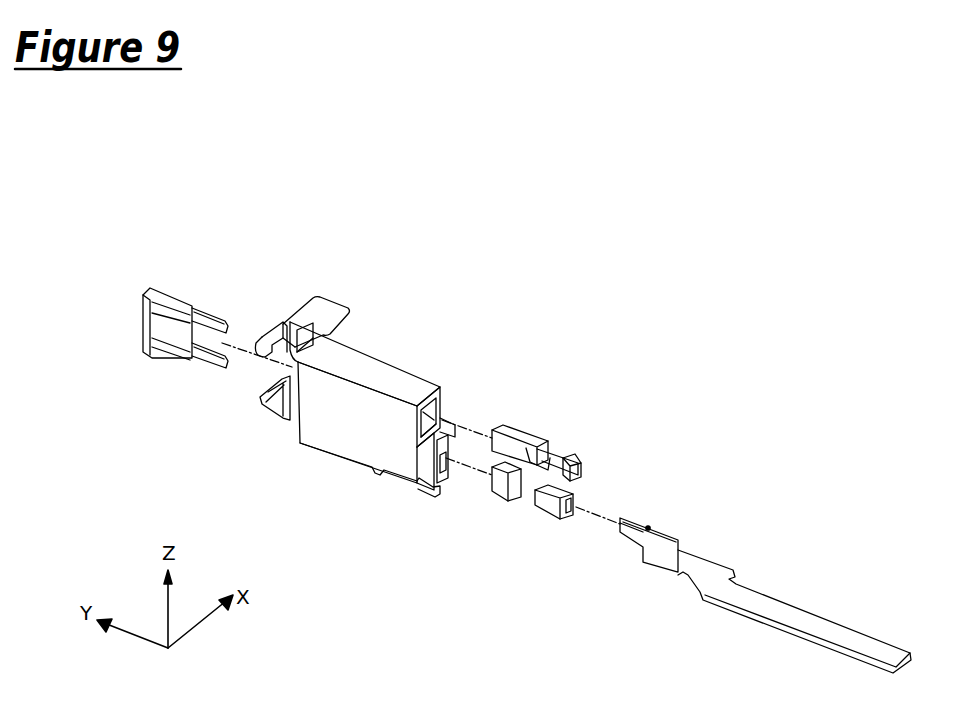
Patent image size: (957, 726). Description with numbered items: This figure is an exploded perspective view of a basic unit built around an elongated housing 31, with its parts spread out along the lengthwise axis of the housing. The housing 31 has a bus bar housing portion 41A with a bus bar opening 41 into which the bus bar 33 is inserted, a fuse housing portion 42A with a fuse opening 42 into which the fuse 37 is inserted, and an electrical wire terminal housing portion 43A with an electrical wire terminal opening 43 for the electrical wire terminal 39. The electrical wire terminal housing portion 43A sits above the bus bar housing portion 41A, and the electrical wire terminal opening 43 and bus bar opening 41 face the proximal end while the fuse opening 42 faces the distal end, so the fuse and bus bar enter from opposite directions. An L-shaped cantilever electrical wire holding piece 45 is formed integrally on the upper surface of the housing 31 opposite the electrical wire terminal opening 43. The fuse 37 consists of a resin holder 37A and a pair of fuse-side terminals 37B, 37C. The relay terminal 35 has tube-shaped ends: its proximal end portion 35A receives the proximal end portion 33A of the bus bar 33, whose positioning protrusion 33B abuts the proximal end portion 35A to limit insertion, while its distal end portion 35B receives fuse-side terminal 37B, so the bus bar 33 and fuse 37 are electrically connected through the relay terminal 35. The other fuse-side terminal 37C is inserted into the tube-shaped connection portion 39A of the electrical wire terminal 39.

The housing 31 is at (335, 452).
The bus bar 33 is at (750, 584).
The proximal end portion of the bus bar 33A is at (632, 535).
The positioning protrusion 33B is at (648, 527).
The relay terminal 35 is at (519, 540).
The proximal end portion of the relay terminal 35A is at (552, 508).
The distal end portion of the relay terminal 35B is at (503, 490).
The fuse 37 is at (145, 318).
The resin holder 37A is at (163, 330).
The fuse-side terminal 37B is at (205, 360).
The fuse-side terminal 37C is at (205, 323).
The electrical wire terminal 39 is at (535, 416).
The connection portion 39A is at (503, 447).
The bus bar opening 41 is at (450, 447).
The bus bar housing portion 41A is at (413, 467).
The fuse opening 42 is at (268, 352).
The fuse housing portion 42A is at (277, 412).
The electrical wire terminal opening 43 is at (440, 403).
The electrical wire terminal housing portion 43A is at (377, 372).
The electrical wire holding piece 45 is at (322, 310).